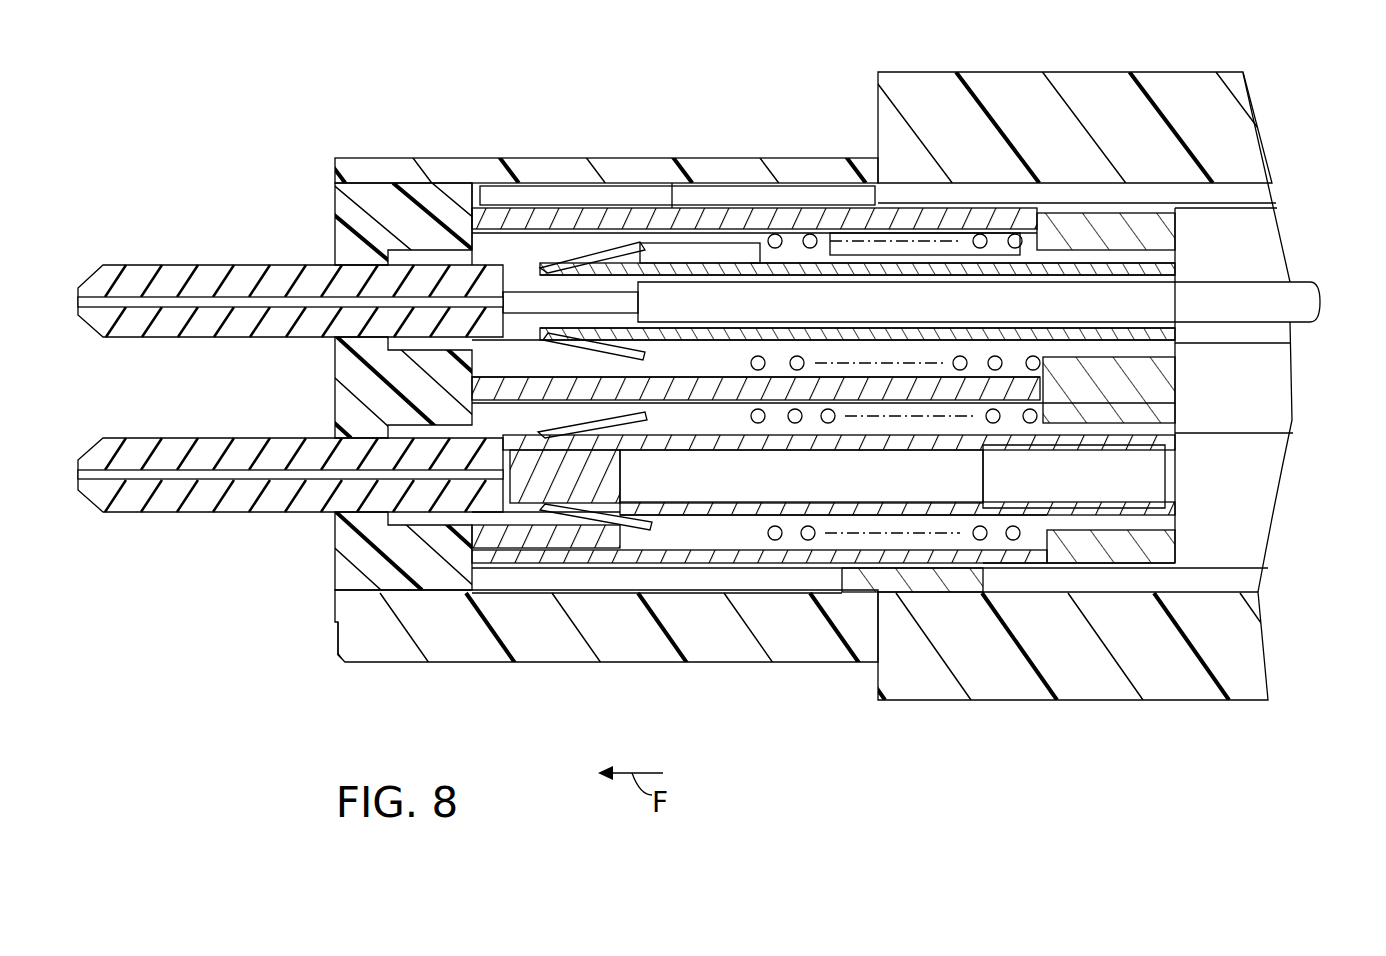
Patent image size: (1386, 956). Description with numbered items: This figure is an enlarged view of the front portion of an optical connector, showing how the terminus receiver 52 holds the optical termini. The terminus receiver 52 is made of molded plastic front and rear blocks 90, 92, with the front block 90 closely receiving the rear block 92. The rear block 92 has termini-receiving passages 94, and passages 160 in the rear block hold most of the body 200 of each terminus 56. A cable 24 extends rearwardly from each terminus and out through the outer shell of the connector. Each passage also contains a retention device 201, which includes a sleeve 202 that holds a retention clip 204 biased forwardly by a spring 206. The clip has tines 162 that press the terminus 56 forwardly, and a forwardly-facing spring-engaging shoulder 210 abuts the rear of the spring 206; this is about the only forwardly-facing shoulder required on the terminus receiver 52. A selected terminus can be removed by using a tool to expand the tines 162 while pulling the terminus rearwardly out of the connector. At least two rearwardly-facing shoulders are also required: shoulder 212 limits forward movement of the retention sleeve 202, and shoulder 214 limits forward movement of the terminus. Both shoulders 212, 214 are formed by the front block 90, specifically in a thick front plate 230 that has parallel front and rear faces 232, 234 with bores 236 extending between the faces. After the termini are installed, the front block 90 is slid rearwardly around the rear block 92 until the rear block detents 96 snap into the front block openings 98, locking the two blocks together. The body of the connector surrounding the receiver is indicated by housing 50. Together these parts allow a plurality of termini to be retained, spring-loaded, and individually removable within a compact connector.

The cable 24 is at (1310, 280).
The connector housing 50 is at (992, 700).
The terminus receiver 52 is at (653, 597).
The terminus 56 is at (868, 252).
The front block 90 is at (418, 597).
The rear block 92 is at (1053, 578).
The termini-receiving passages 94 is at (1112, 525).
The detents 96 is at (790, 568).
The front block openings 98 is at (800, 567).
The passages 160 is at (800, 232).
The tines 162 is at (565, 262).
The terminus body 200 is at (765, 508).
The retention device 201 is at (603, 233).
The sleeve 202 is at (555, 545).
The retention clip 204 is at (655, 530).
The spring 206 is at (785, 228).
The spring-engaging shoulder 210 is at (1023, 237).
The shoulder 212 is at (492, 205).
The shoulder 214 is at (400, 235).
The front plate 230 is at (372, 573).
The front face 232 is at (333, 363).
The rear face 234 is at (470, 380).
The bores 236 is at (375, 495).